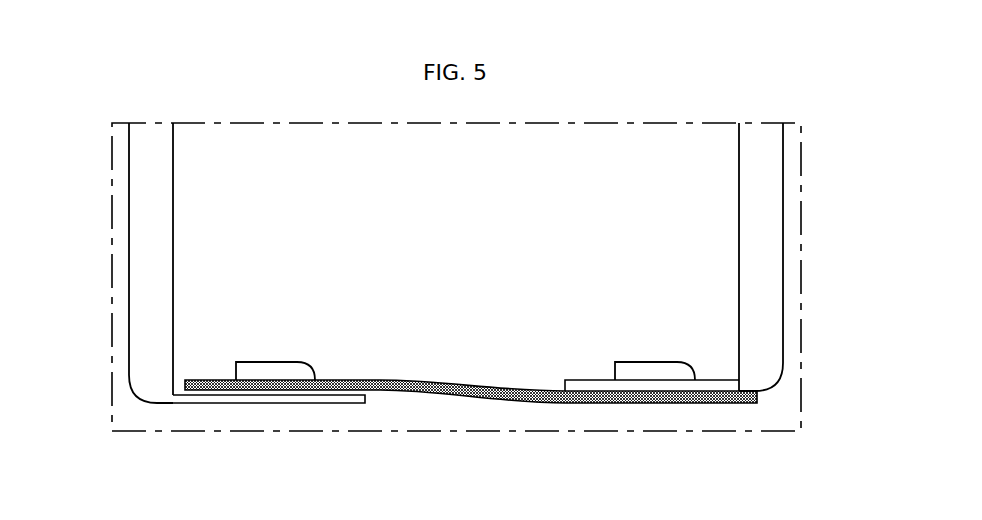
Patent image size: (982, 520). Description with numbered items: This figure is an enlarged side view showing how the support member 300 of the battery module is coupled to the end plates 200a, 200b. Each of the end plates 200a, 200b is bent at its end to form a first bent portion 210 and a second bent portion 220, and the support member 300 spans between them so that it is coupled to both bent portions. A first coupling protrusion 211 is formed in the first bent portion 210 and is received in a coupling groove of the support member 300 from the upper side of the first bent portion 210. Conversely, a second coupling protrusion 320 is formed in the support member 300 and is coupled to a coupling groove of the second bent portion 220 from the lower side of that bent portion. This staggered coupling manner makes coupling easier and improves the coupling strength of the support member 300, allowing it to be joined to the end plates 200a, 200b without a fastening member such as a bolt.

The end plate 200a is at (148, 300).
The end plate 200b is at (768, 304).
The first bent portion 210 is at (272, 398).
The second bent portion 220 is at (712, 386).
The support member 300 is at (472, 387).
The first coupling protrusion 211 is at (275, 367).
The second coupling protrusion 320 is at (636, 367).